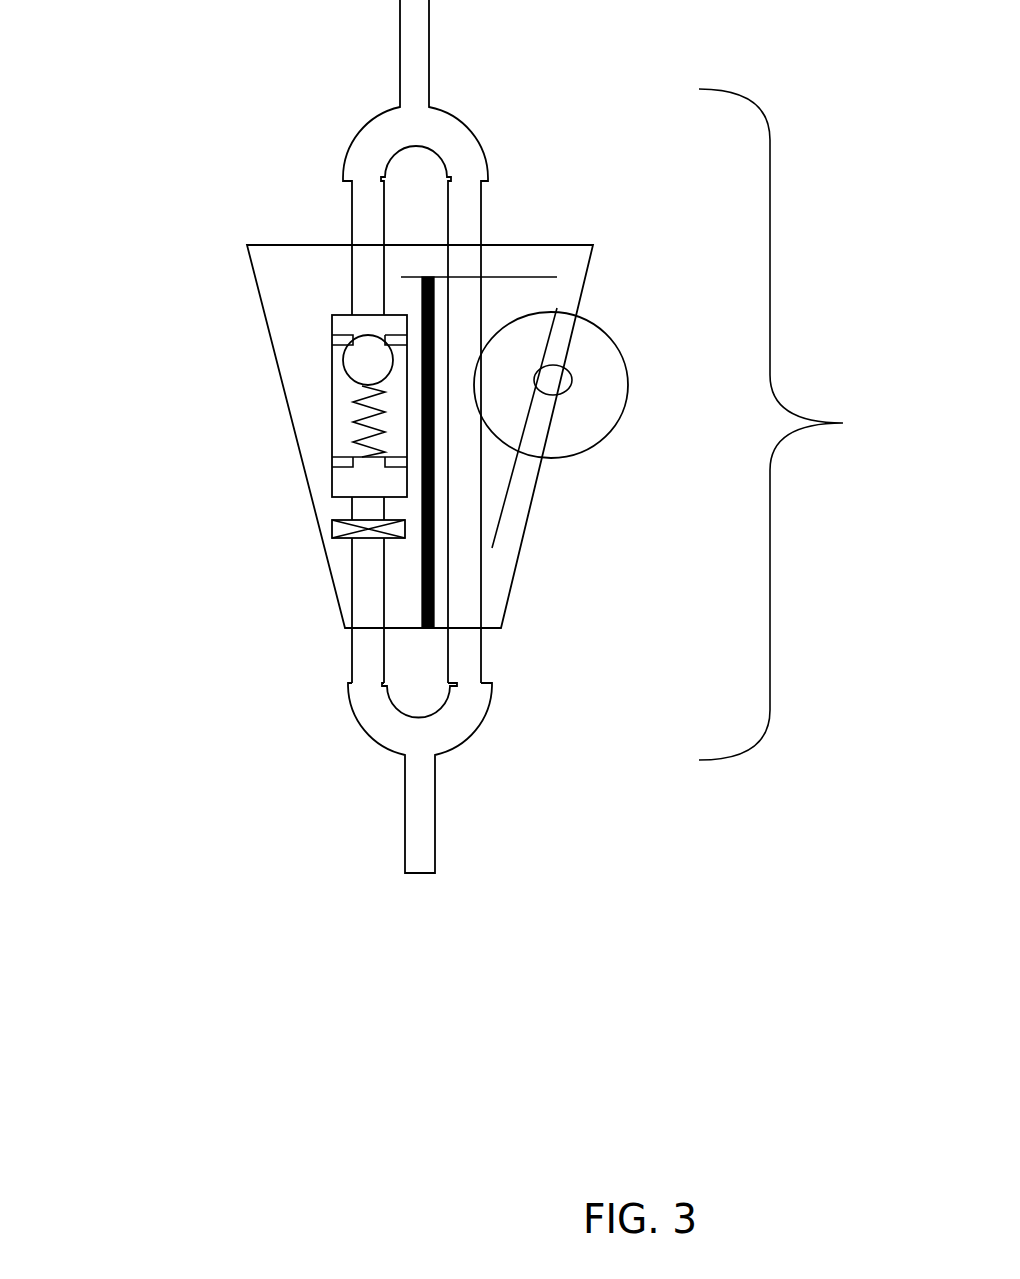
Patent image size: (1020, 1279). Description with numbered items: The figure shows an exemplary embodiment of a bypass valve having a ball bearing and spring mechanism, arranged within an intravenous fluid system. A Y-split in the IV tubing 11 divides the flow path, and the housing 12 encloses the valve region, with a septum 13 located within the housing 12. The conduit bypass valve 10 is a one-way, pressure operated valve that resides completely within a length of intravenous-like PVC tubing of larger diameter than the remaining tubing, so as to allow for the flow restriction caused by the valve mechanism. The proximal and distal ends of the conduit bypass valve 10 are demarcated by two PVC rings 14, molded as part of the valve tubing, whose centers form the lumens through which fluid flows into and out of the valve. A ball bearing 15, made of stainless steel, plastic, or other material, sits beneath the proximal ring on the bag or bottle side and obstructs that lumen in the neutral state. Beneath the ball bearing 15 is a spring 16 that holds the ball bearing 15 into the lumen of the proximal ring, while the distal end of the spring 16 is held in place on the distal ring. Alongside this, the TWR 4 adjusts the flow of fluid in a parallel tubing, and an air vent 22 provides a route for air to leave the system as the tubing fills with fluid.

The conduit bypass valve 10 is at (467, 436).
The IV tubing 11 is at (330, 117).
The housing 12 is at (218, 258).
The septum 13 is at (398, 299).
The PVC rings 14 is at (299, 347).
The ball bearing 15 is at (329, 378).
The spring 16 is at (331, 433).
The air vent 22 is at (317, 545).
The TWR 4 is at (611, 466).